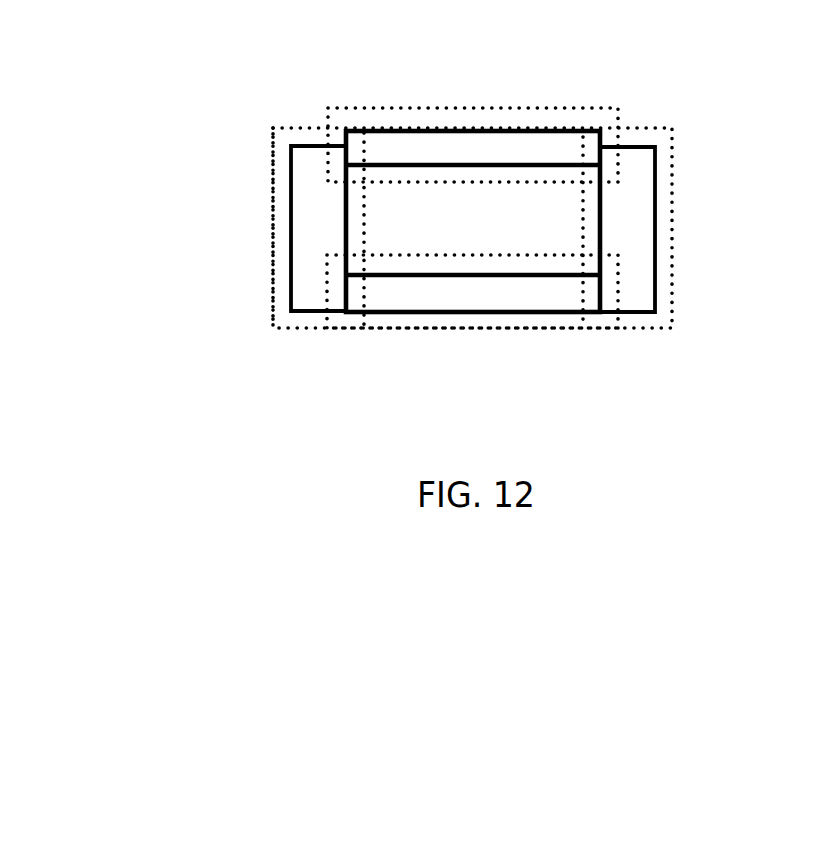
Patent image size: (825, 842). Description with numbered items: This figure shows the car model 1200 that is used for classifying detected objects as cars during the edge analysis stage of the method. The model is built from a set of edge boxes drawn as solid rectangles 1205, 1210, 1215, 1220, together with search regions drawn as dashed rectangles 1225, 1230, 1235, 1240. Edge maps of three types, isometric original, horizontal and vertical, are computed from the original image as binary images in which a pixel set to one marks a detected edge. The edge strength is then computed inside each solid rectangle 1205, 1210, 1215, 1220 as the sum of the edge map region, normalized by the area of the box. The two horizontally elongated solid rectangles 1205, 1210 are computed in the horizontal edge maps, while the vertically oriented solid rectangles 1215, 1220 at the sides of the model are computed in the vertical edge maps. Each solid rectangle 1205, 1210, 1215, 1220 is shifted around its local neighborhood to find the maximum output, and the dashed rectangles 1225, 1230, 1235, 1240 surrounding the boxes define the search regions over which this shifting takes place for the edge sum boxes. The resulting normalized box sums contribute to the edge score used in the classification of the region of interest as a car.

The car model 1200 is at (252, 96).
The solid rectangle 1205 is at (527, 125).
The solid rectangle 1210 is at (455, 318).
The solid rectangle 1215 is at (296, 183).
The solid rectangle 1220 is at (658, 189).
The dashed rectangle 1225 is at (388, 103).
The dashed rectangle 1230 is at (542, 330).
The dashed rectangle 1235 is at (272, 245).
The dashed rectangle 1240 is at (667, 250).